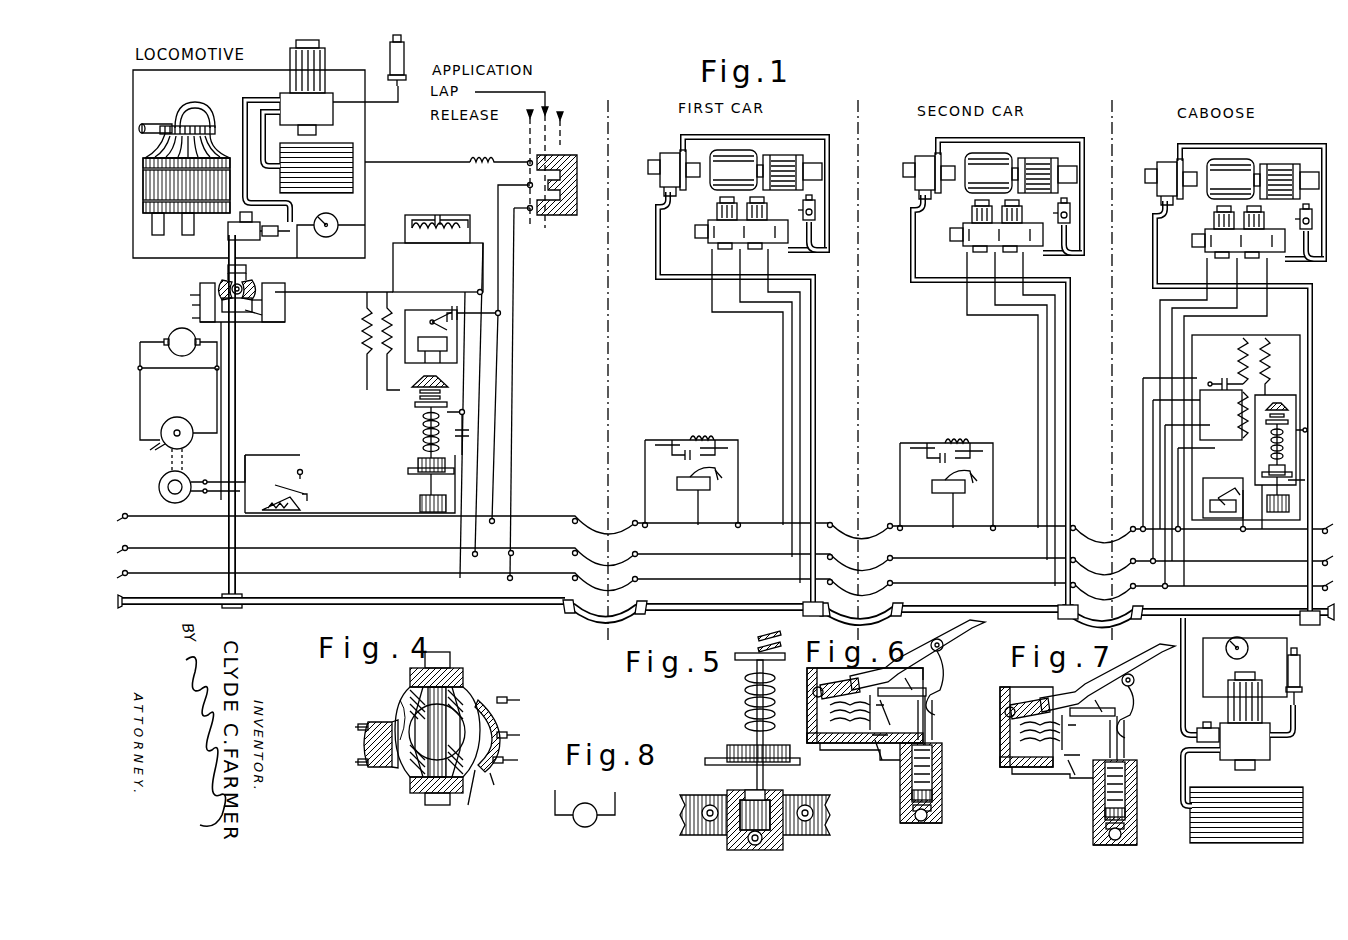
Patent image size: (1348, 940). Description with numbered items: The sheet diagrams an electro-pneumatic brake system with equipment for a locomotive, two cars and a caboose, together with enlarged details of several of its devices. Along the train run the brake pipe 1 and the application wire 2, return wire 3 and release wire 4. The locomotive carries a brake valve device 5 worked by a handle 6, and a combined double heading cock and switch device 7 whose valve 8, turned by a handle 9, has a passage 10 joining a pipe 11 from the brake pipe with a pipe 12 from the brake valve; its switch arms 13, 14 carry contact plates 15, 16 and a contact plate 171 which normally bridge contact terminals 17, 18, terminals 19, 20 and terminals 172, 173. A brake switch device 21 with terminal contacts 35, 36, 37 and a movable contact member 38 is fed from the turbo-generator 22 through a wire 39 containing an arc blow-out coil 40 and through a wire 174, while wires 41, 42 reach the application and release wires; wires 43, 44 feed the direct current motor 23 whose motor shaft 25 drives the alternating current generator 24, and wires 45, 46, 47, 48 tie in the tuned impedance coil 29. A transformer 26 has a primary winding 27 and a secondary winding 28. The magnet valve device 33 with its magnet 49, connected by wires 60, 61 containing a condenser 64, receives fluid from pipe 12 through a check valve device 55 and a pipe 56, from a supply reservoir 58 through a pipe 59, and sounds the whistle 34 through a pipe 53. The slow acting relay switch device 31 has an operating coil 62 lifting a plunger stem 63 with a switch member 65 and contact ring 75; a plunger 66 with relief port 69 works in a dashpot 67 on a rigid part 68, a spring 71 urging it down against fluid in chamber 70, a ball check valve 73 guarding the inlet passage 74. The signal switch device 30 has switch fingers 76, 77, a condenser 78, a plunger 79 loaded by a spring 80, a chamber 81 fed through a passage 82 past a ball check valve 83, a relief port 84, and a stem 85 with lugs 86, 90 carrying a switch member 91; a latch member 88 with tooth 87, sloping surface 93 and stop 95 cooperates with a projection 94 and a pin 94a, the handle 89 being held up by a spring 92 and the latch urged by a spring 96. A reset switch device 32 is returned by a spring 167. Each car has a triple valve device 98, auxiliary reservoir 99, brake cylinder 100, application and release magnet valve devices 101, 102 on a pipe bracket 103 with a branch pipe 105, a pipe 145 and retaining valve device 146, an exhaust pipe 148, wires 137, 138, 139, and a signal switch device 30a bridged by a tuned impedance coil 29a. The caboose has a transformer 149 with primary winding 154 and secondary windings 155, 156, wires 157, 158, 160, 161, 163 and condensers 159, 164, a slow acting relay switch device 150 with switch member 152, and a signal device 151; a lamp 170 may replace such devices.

In FIG. 1, the train brake pipe 1 is at (560, 607).
In FIG. 1, the application wire 2 is at (535, 521).
In FIG. 1, the return wire 3 is at (725, 554).
In FIG. 1, the release wire 4 is at (725, 579).
In FIG. 1, the brake valve device 5 is at (158, 233).
In FIG. 1, the handle 6 is at (151, 125).
In FIG. 1, the combined double heading cock and switch device 7 is at (237, 288).
In FIG. 4, the combined double heading cock and switch device 7 is at (455, 672).
In FIG. 4, the valve 8 is at (405, 700).
In FIG. 1, the handle 9 is at (247, 310).
In FIG. 4, the passage 10 is at (420, 780).
In FIG. 1, the pipe 11 is at (228, 524).
In FIG. 4, the pipe 11 is at (435, 805).
In FIG. 1, the pipe 12 is at (213, 421).
In FIG. 4, the pipe 12 is at (440, 656).
In FIG. 1, the switch arm 13 is at (265, 245).
In FIG. 4, the switch arm 13 is at (480, 700).
In FIG. 1, the switch arm 14 is at (215, 288).
In FIG. 4, the switch arm 14 is at (415, 720).
In FIG. 1, the contact plate 15 is at (278, 292).
In FIG. 4, the contact plate 15 is at (502, 732).
In FIG. 1, the contact plate 16 is at (200, 305).
In FIG. 4, the contact plate 16 is at (368, 744).
In FIG. 1, the contact terminal 17 is at (252, 300).
In FIG. 4, the contact terminal 17 is at (508, 735).
In FIG. 4, the contact terminal 18 is at (508, 699).
In FIG. 1, the contact terminal 19 is at (200, 318).
In FIG. 4, the contact terminal 19 is at (364, 765).
In FIG. 1, the contact terminal 20 is at (190, 295).
In FIG. 4, the contact terminal 20 is at (360, 724).
In FIG. 1, the brake switch device 21 is at (530, 228).
In FIG. 1, the turbo-generator 22 is at (178, 384).
In FIG. 1, the direct current motor 23 is at (178, 430).
In FIG. 1, the alternating current generator 24 is at (159, 487).
In FIG. 1, the motor shaft 25 is at (170, 462).
In FIG. 1, the transformer 26 is at (368, 339).
In FIG. 1, the primary winding 27 is at (385, 350).
In FIG. 1, the secondary winding 28 is at (418, 380).
In FIG. 1, the tuned impedance coil 29 is at (415, 215).
In FIG. 1, the tuned impedance coil 29a is at (819, 470).
In FIG. 1, the signal switch device 30 is at (432, 350).
In FIG. 6, the signal switch device 30 is at (1005, 695).
In FIG. 7, the signal switch device 30 is at (1008, 673).
In FIG. 1, the signal switch device 30a is at (956, 494).
In FIG. 1, the slow acting relay switch device 31 is at (415, 405).
In FIG. 5, the slow acting relay switch device 31 is at (748, 661).
In FIG. 1, the reset switch device 32 is at (290, 483).
In FIG. 1, the magnet valve device 33 is at (775, 428).
In FIG. 1, the sounding device 34 is at (1298, 655).
In FIG. 1, the terminal contact 35 is at (528, 161).
In FIG. 1, the terminal contact 36 is at (528, 184).
In FIG. 1, the terminal contact 37 is at (528, 207).
In FIG. 1, the movable contact member 38 is at (578, 160).
In FIG. 1, the wire 39 is at (440, 162).
In FIG. 4, the wire 39 is at (498, 768).
In FIG. 1, the magnetic arc blow-out coil 40 is at (494, 151).
In FIG. 1, the wire 41 is at (500, 270).
In FIG. 1, the wire 42 is at (515, 285).
In FIG. 1, the wire 43 is at (216, 400).
In FIG. 1, the wire 44 is at (142, 430).
In FIG. 1, the wire 45 is at (311, 316).
In FIG. 1, the wire 46 is at (482, 243).
In FIG. 1, the wire 47 is at (379, 283).
In FIG. 1, the wire 48 is at (242, 322).
In FIG. 1, the magnet 49 is at (312, 70).
In FIG. 1, the passage and pipe 53 is at (1293, 715).
In FIG. 1, the check valve device 55 is at (255, 221).
In FIG. 1, the pipe and passage 56 is at (242, 120).
In FIG. 1, the fluid pressure supply reservoir 58 is at (791, 493).
In FIG. 1, the passage and pipe 59 is at (264, 162).
In FIG. 1, the wire 60 is at (366, 140).
In FIG. 1, the wire 61 is at (250, 72).
In FIG. 1, the operating coil 62 is at (422, 430).
In FIG. 5, the operating coil 62 is at (745, 702).
In FIG. 1, the plunger stem 63 is at (425, 480).
In FIG. 5, the plunger stem 63 is at (764, 740).
In FIG. 1, the condenser 64 is at (466, 432).
In FIG. 1, the switch member 65 is at (436, 458).
In FIG. 5, the switch member 65 is at (735, 745).
In FIG. 5, the plunger 66 is at (770, 795).
In FIG. 1, the dashpot 67 is at (420, 502).
In FIG. 5, the dashpot 67 is at (768, 808).
In FIG. 5, the rigid part 68 is at (700, 795).
In FIG. 5, the relief port 69 is at (716, 805).
In FIG. 5, the chamber 70 is at (830, 812).
In FIG. 1, the spring 71 is at (420, 397).
In FIG. 5, the spring 71 is at (757, 638).
In FIG. 5, the ball check valve 73 is at (727, 840).
In FIG. 5, the fluid inlet passage 74 is at (785, 845).
In FIG. 5, the contact ring 75 is at (725, 758).
In FIG. 5, the switch finger 76 is at (775, 712).
In FIG. 6, the switch finger 76 is at (830, 710).
In FIG. 7, the switch finger 76 is at (1055, 705).
In FIG. 6, the switch finger 77 is at (885, 715).
In FIG. 7, the switch finger 77 is at (1066, 760).
In FIG. 1, the condenser 78 is at (450, 306).
In FIG. 6, the plunger 79 is at (900, 775).
In FIG. 7, the plunger 79 is at (1095, 795).
In FIG. 6, the spring 80 is at (944, 762).
In FIG. 7, the spring 80 is at (1139, 777).
In FIG. 6, the chamber 81 is at (934, 806).
In FIG. 7, the chamber 81 is at (1104, 826).
In FIG. 6, the passage 82 is at (920, 822).
In FIG. 7, the passage 82 is at (1112, 840).
In FIG. 6, the ball check valve 83 is at (944, 822).
In FIG. 7, the ball check valve 83 is at (1139, 840).
In FIG. 6, the relief port 84 is at (934, 792).
In FIG. 7, the relief port 84 is at (1127, 810).
In FIG. 6, the stem 85 is at (934, 740).
In FIG. 7, the stem 85 is at (1126, 758).
In FIG. 6, the lug 86 is at (928, 725).
In FIG. 7, the lug 86 is at (1120, 740).
In FIG. 6, the tooth 87 is at (900, 705).
In FIG. 6, the latch member 88 is at (938, 695).
In FIG. 7, the latch member 88 is at (1126, 722).
In FIG. 1, the handle 89 is at (824, 419).
In FIG. 6, the handle 89 is at (912, 660).
In FIG. 7, the handle 89 is at (1155, 675).
In FIG. 6, the lug 90 is at (901, 687).
In FIG. 7, the lug 90 is at (1098, 718).
In FIG. 6, the switch member 91 is at (870, 748).
In FIG. 7, the switch member 91 is at (1040, 776).
In FIG. 6, the spring 92 is at (835, 690).
In FIG. 7, the spring 92 is at (1038, 705).
In FIG. 6, the sloping surface 93 is at (945, 670).
In FIG. 7, the sloping surface 93 is at (1120, 720).
In FIG. 6, the projection 94 is at (914, 677).
In FIG. 7, the pin 94a is at (1107, 704).
In FIG. 6, the stop 95 is at (936, 714).
In FIG. 7, the stop 95 is at (1130, 712).
In FIG. 6, the spring 96 is at (945, 646).
In FIG. 7, the spring 96 is at (1128, 674).
In FIG. 1, the triple valve device 98 is at (660, 160).
In FIG. 1, the auxiliary reservoir 99 is at (982, 174).
In FIG. 1, the brake cylinder 100 is at (780, 165).
In FIG. 1, the application magnet valve device 101 is at (722, 212).
In FIG. 1, the release magnet valve device 102 is at (760, 212).
In FIG. 1, the pipe bracket 103 is at (722, 235).
In FIG. 1, the branch pipe 105 is at (678, 280).
In FIG. 1, the wire 137 is at (783, 327).
In FIG. 1, the wire 138 is at (792, 348).
In FIG. 1, the wire 139 is at (800, 371).
In FIG. 1, the pipe and passage 145 is at (822, 246).
In FIG. 1, the brake cylinder pressure retaining valve device 146 is at (815, 212).
In FIG. 1, the exhaust pipe and passage 148 is at (827, 185).
In FIG. 1, the transformer 149 is at (1250, 338).
In FIG. 1, the slow acting relay switch device 150 is at (1276, 437).
In FIG. 1, the signal device 151 is at (330, 228).
In FIG. 1, the switch member 152 is at (1240, 518).
In FIG. 1, the primary winding 154 is at (1238, 348).
In FIG. 1, the secondary winding 155 is at (1276, 366).
In FIG. 1, the secondary winding 156 is at (1224, 415).
In FIG. 1, the wire 157 is at (1157, 451).
In FIG. 1, the wire 158 is at (1158, 478).
In FIG. 1, the condenser 159 is at (1218, 382).
In FIG. 1, the wire 160 is at (1286, 672).
In FIG. 8, the wire 160 is at (616, 800).
In FIG. 1, the wire 161 is at (1215, 680).
In FIG. 8, the wire 161 is at (567, 794).
In FIG. 1, the wire 163 is at (1163, 502).
In FIG. 1, the condenser 164 is at (1166, 485).
In FIG. 1, the spring 167 is at (292, 503).
In FIG. 8, the lamp 170 is at (592, 823).
In FIG. 4, the contact plate 171 is at (463, 797).
In FIG. 4, the contact terminal 172 is at (490, 790).
In FIG. 4, the contact terminal 173 is at (505, 760).
In FIG. 1, the wire 174 is at (263, 340).
In FIG. 4, the wire 174 is at (498, 782).